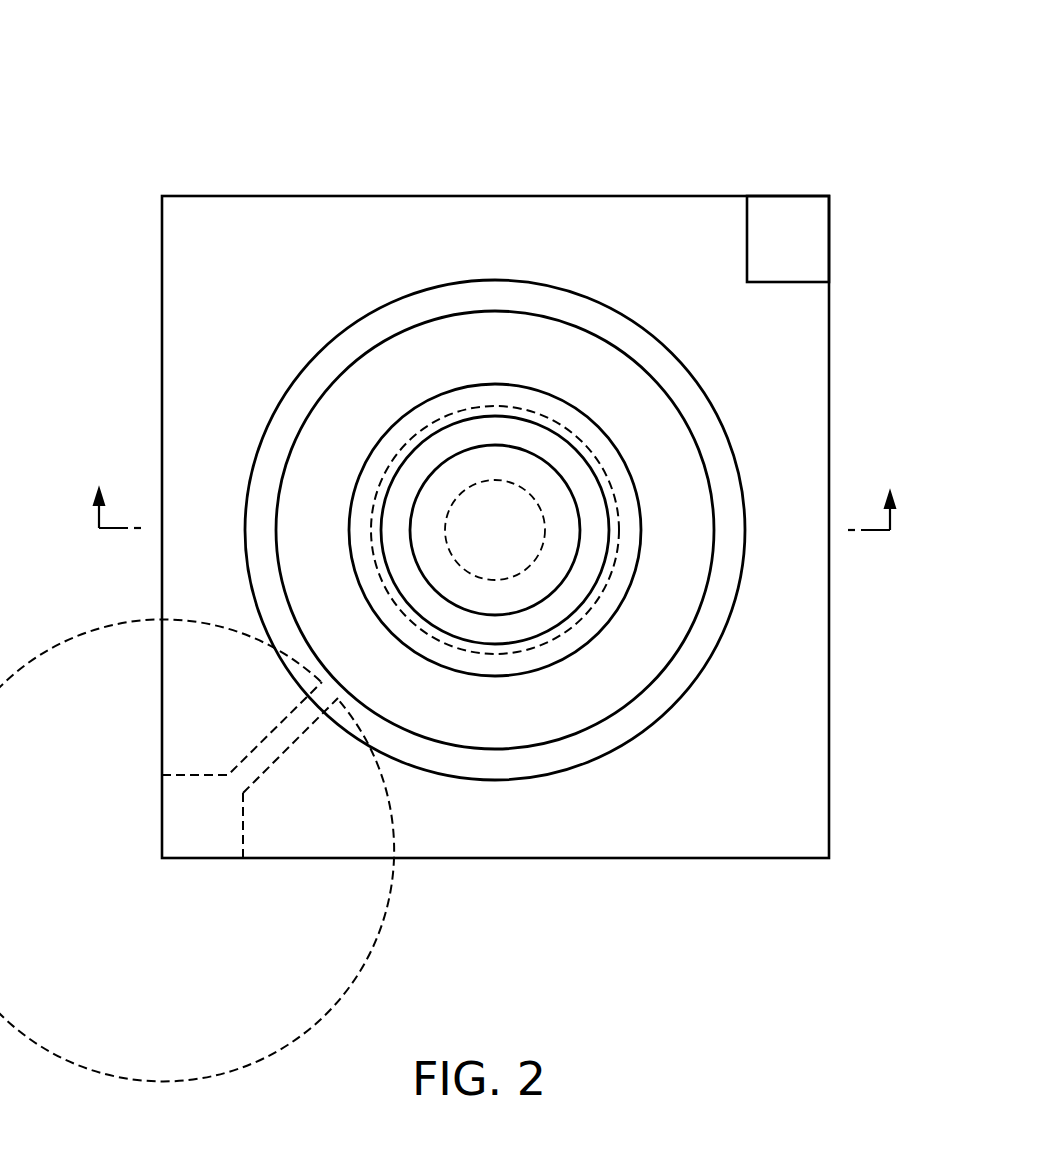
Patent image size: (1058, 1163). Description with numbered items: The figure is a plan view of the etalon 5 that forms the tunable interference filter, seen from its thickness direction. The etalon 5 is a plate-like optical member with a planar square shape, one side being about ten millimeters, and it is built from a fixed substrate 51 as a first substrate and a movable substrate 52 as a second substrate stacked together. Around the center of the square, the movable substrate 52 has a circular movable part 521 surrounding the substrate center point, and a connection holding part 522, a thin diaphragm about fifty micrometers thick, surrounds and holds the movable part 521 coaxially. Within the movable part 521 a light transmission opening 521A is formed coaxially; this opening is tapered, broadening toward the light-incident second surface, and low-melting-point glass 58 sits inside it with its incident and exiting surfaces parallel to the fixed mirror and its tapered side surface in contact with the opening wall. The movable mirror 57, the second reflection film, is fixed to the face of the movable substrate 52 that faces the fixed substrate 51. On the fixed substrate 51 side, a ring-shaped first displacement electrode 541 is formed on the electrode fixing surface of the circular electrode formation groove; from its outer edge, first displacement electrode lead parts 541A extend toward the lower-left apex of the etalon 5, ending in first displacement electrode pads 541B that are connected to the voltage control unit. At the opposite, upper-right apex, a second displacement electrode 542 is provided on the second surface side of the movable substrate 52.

The etalon 5 is at (540, 91).
The fixed substrate 51 is at (495, 479).
The movable substrate 52 is at (661, 194).
The second displacement electrode 542 is at (782, 216).
The connection holding part 522 is at (580, 697).
The first displacement electrode 541 is at (460, 756).
The first displacement electrode lead part 541A is at (271, 728).
The first displacement electrode pad 541B is at (242, 826).
The movable part 521 is at (567, 599).
The light transmission opening 521A is at (582, 533).
The low-melting-point glass 58 is at (521, 466).
The movable mirror 57 is at (483, 482).